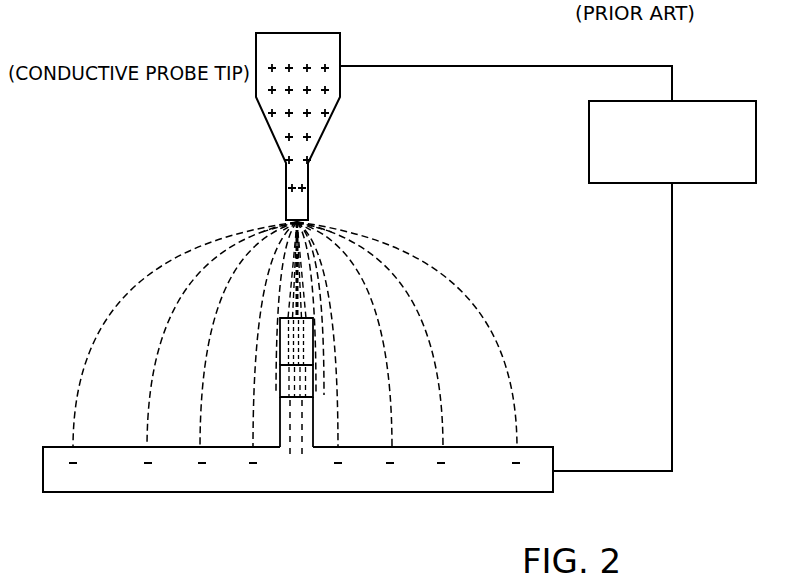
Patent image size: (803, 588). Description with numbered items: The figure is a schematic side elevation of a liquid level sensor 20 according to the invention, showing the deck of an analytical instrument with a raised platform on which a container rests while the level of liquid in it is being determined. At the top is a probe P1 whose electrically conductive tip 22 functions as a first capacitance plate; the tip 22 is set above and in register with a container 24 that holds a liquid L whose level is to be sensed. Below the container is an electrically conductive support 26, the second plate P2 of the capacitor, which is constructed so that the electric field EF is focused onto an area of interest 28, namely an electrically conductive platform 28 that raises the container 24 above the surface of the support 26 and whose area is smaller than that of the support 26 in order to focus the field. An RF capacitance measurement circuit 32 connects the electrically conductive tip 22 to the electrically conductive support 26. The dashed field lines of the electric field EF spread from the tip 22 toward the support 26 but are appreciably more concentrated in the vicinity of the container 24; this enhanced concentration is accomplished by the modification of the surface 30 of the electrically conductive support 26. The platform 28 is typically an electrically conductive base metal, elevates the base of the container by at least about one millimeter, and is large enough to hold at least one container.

The liquid level sensor 20 is at (410, 195).
The electrically conductive tip 22 is at (302, 200).
The container 24 is at (305, 347).
The electrically conductive support 26 is at (336, 489).
The electrically conductive platform 28 is at (302, 433).
The surface 30 is at (321, 330).
The RF capacitance measurement circuit 32 is at (587, 142).
The probe P1 is at (298, 110).
The second electrode plate (container) P2 is at (510, 493).
The electric field EF is at (240, 303).
The liquid L is at (300, 387).